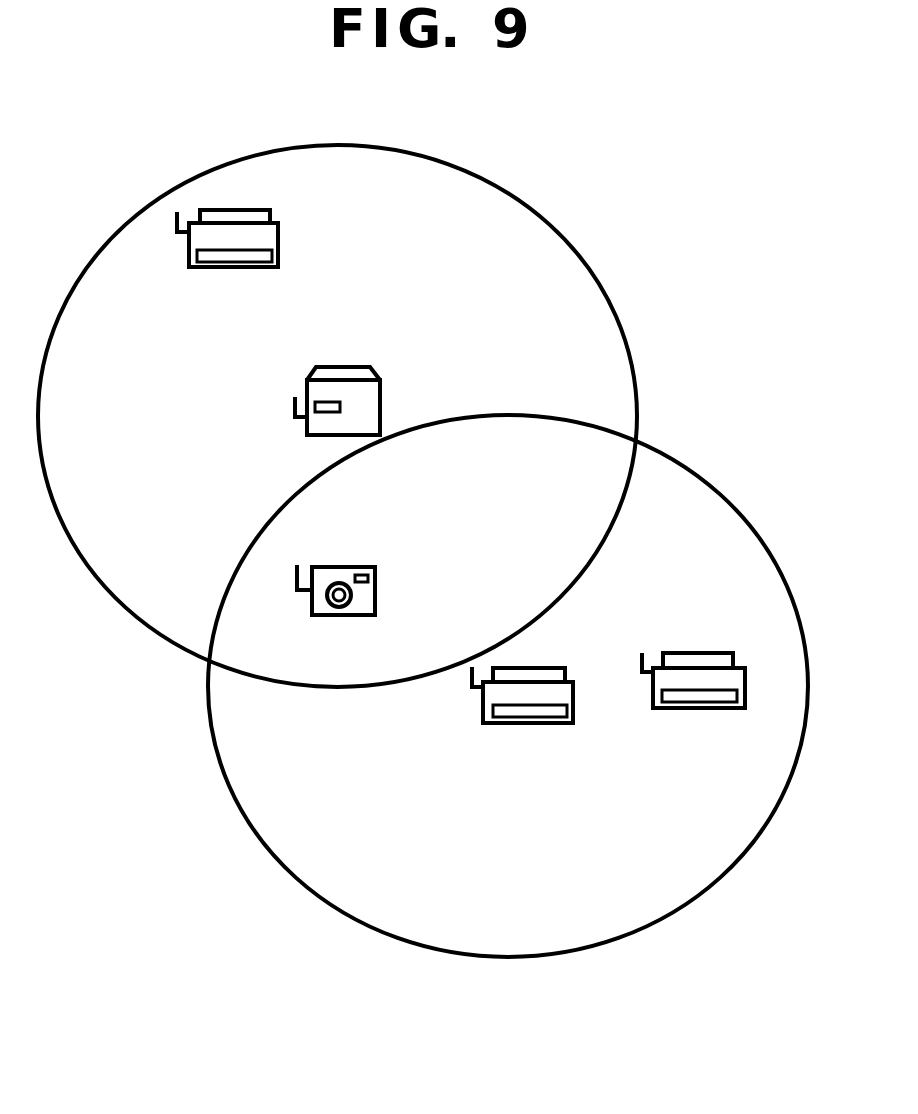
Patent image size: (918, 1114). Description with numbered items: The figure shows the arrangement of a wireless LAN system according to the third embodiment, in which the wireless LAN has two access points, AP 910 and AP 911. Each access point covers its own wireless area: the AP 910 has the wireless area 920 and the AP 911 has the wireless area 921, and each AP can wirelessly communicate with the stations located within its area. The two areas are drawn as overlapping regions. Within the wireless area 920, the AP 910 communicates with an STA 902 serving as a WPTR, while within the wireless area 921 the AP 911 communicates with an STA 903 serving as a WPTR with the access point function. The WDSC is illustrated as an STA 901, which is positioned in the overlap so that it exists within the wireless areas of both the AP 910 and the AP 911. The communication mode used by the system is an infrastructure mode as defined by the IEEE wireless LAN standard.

The wireless area 920 is at (442, 138).
The wireless area 921 is at (730, 453).
The STA 901 is at (377, 593).
The STA 902 is at (279, 243).
The STA 903 is at (712, 710).
The AP 910 is at (382, 395).
The AP 911 is at (545, 725).